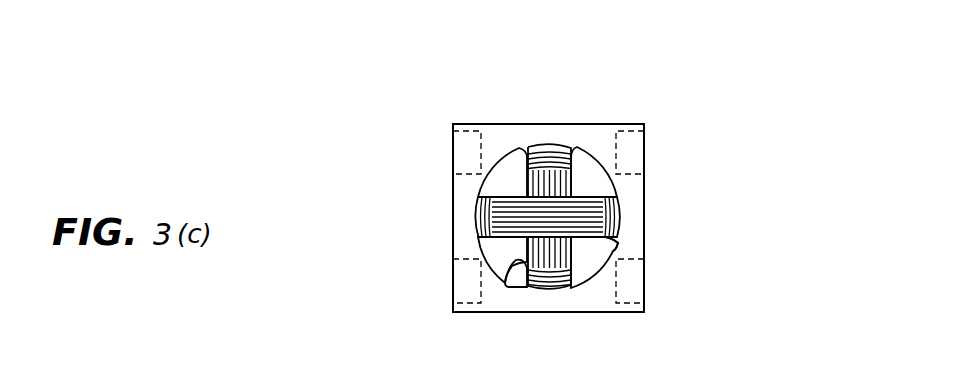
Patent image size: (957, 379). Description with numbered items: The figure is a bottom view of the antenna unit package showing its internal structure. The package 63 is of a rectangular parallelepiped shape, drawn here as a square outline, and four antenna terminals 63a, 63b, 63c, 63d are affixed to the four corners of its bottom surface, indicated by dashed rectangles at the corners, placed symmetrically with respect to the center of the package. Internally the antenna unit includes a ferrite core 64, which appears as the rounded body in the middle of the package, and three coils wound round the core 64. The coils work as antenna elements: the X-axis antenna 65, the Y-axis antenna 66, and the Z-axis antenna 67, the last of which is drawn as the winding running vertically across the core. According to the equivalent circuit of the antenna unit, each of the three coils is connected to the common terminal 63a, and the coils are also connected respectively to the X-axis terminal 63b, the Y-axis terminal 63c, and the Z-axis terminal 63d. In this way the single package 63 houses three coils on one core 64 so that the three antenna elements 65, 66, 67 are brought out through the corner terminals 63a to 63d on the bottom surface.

The chip body 63 is at (548, 218).
The common terminal 63a is at (453, 153).
The X-axis terminal 63b is at (453, 283).
The Y-axis terminal 63c is at (644, 286).
The Z-axis terminal 63d is at (644, 158).
The ferrite core 64 is at (507, 170).
The X-axis antenna 65 is at (505, 282).
The Y-axis antenna 66 is at (616, 247).
The Z-axis antenna 67 is at (548, 145).